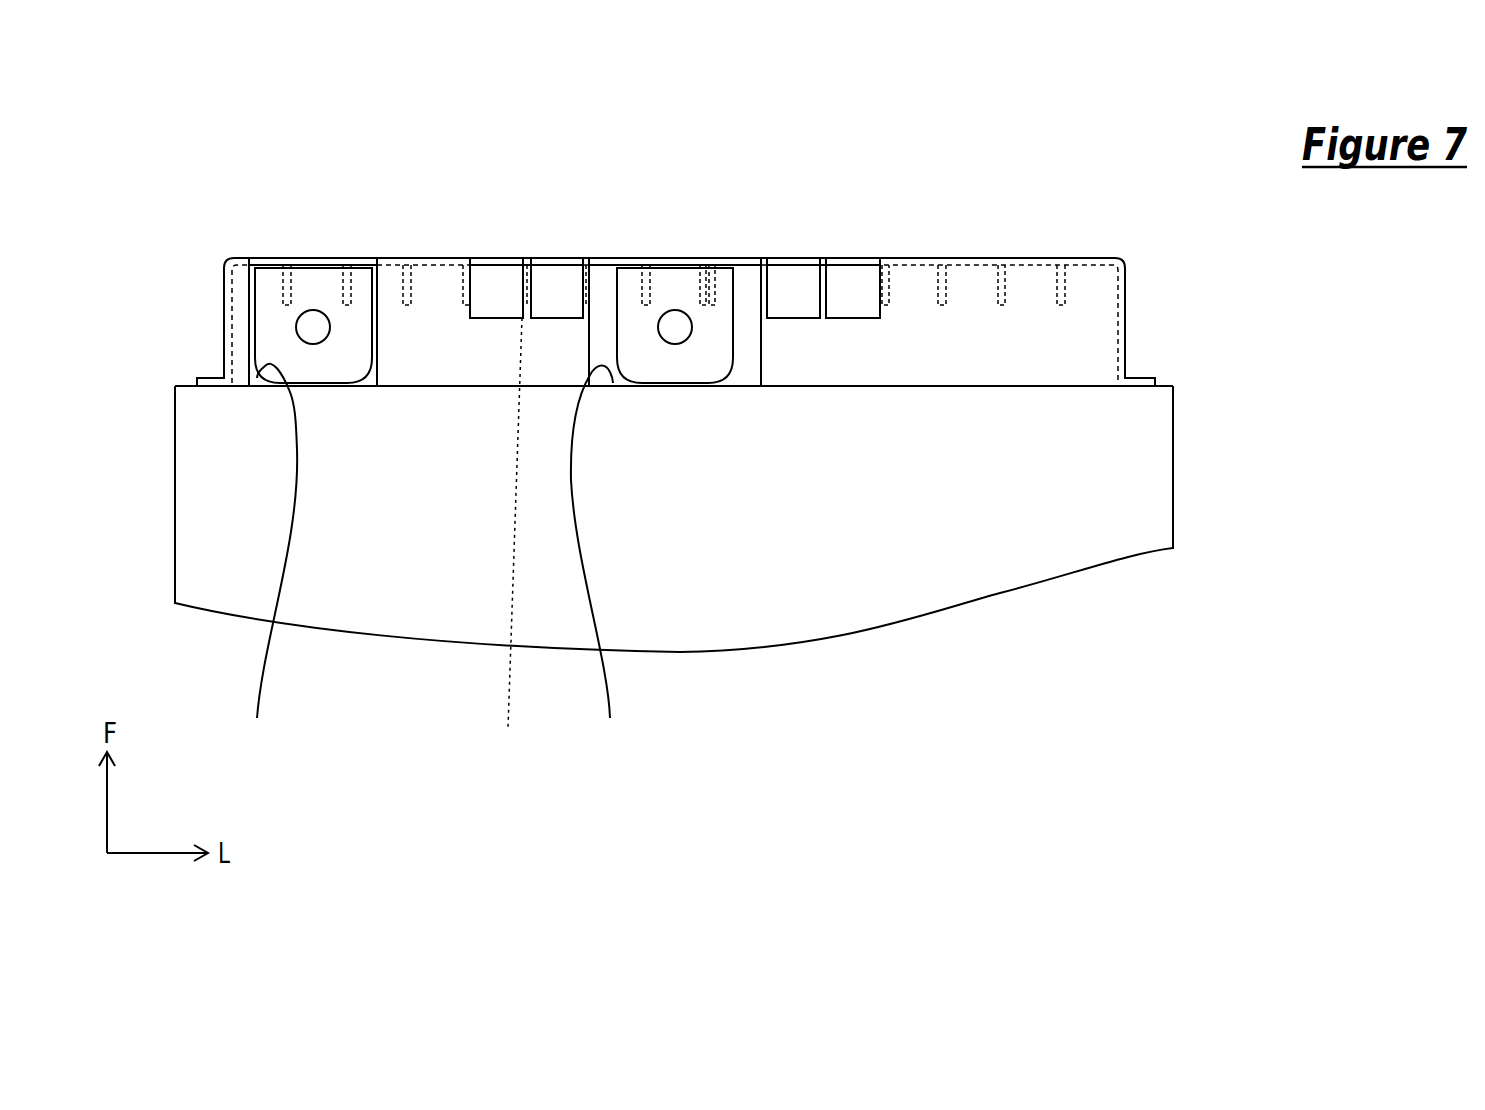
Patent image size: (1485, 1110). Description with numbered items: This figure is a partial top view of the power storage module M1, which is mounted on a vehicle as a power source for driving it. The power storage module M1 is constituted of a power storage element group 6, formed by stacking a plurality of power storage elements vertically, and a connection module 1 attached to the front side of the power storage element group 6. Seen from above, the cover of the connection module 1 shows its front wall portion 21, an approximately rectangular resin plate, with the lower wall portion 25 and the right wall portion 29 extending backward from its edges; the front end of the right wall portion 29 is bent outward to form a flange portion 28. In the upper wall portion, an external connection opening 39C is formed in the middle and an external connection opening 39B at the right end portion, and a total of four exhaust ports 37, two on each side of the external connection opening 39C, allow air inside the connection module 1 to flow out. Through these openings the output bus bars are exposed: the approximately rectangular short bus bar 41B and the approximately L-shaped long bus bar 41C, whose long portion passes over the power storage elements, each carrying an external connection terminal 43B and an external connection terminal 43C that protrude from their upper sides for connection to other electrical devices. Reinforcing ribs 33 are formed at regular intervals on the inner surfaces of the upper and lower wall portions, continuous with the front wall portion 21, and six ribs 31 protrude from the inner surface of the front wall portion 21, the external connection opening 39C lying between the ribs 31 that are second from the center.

The power storage module M1 is at (245, 150).
The connection module 1 is at (1262, 327).
The power storage element group 6 is at (1118, 517).
The front wall portion 21 is at (912, 262).
The lower wall portion 25 is at (973, 357).
The flange portion 28 is at (1145, 378).
The right wall portion 29 is at (1125, 292).
The rib 31 is at (510, 539).
The reinforcing rib 33 is at (1003, 292).
The exhaust port 37 is at (550, 280).
The external connection opening 39B is at (268, 559).
The external connection opening 39C is at (604, 560).
The short bus bar 41B is at (352, 330).
The long bus bar 41C is at (712, 317).
The external connection terminal 43B is at (308, 328).
The external connection terminal 43C is at (676, 326).